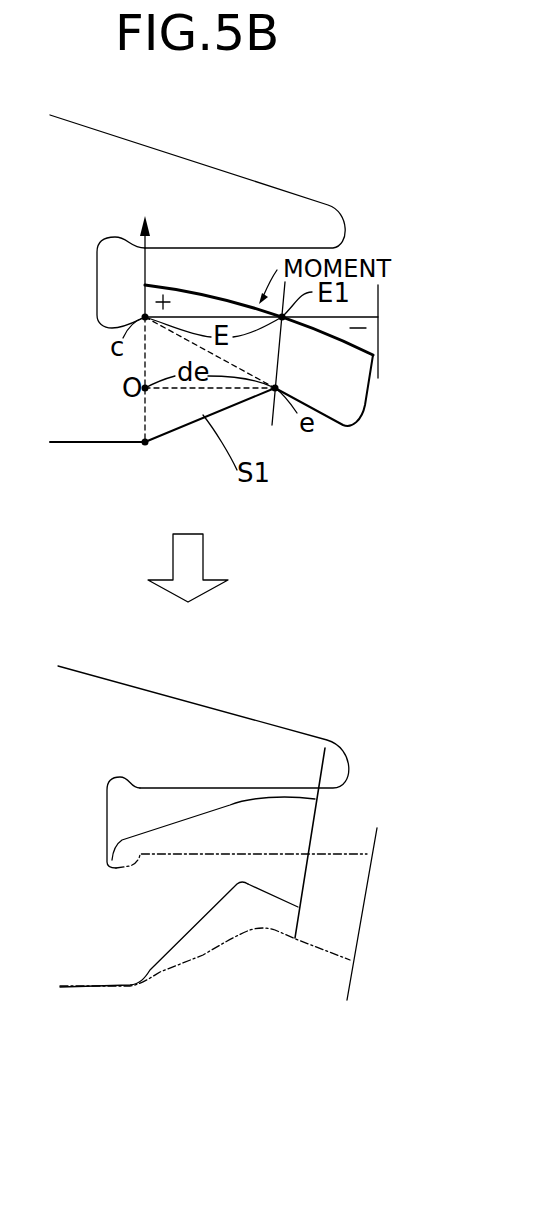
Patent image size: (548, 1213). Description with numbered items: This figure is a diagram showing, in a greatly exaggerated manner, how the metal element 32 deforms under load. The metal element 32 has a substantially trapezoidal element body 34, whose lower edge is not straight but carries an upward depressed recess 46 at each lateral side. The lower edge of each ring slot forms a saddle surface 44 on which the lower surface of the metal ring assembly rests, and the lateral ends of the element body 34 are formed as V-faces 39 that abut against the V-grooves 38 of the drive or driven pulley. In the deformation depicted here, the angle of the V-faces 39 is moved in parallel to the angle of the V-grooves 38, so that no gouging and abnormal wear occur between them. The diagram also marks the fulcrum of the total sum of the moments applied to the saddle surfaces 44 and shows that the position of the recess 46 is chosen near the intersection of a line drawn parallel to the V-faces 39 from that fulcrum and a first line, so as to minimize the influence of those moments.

The metal element 32 is at (240, 164).
The saddle surface 44 is at (223, 316).
The element body 34 is at (177, 400).
The recess 46 is at (275, 388).
The V-face 39 is at (368, 400).
The V-groove 38 is at (347, 983).